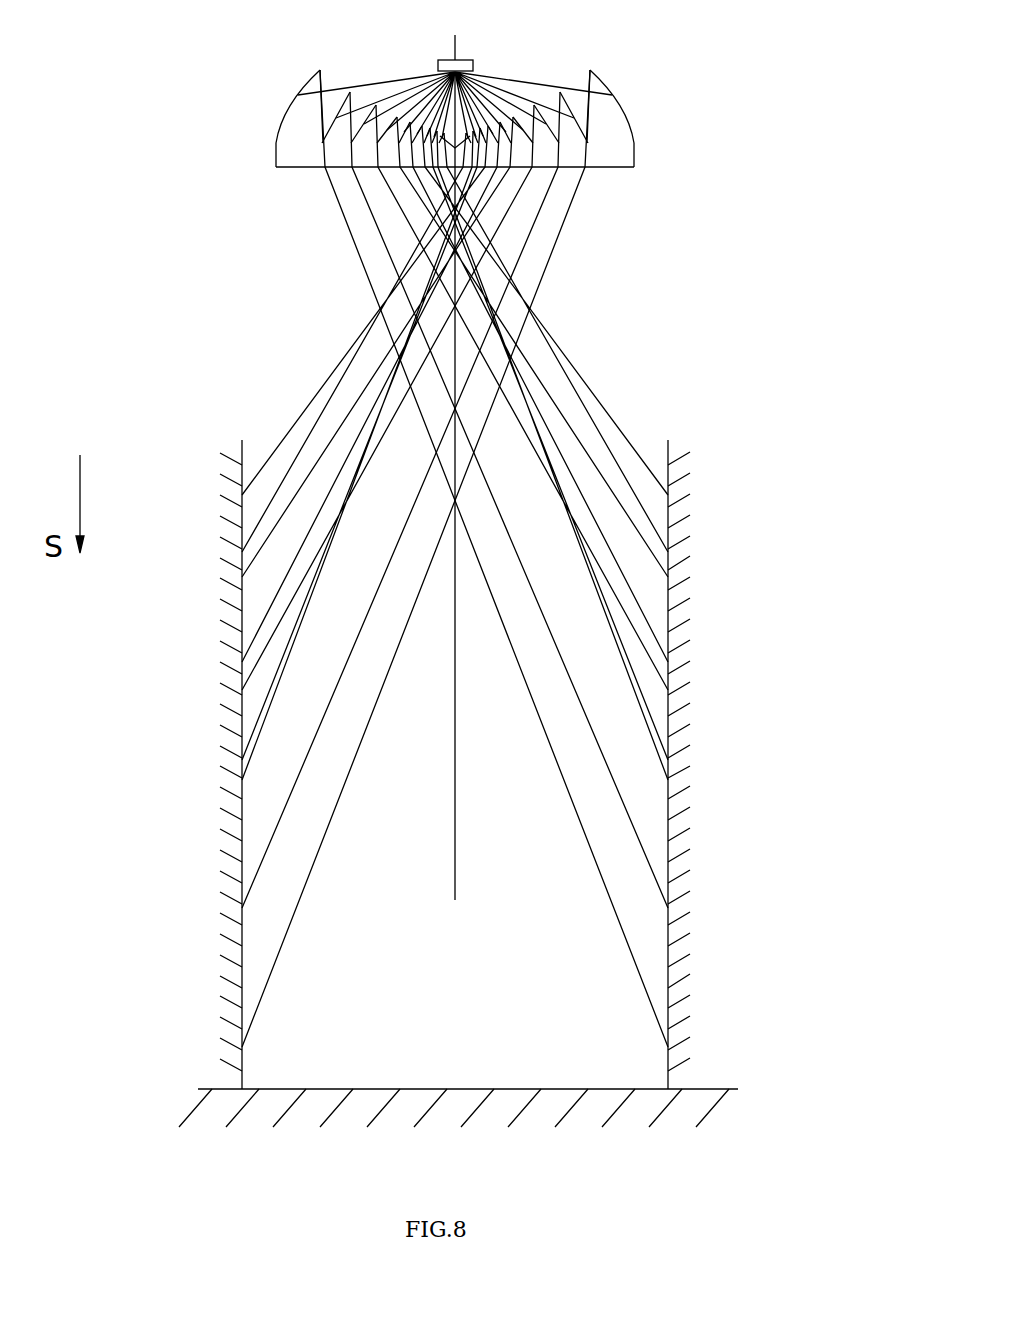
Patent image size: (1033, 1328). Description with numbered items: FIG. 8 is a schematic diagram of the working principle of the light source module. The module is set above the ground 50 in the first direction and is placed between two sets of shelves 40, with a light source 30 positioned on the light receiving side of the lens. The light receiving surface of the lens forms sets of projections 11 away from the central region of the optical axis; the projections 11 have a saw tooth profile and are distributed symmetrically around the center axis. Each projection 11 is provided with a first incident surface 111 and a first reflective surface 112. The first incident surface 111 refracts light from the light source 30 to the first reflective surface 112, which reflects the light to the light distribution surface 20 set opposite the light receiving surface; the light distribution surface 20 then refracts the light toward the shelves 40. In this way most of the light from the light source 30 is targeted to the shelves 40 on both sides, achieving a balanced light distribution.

The projections 11 is at (302, 118).
The first incident surface 111 is at (322, 82).
The first reflective surface 112 is at (617, 110).
The light distribution surface 20 is at (478, 132).
The light source 30 is at (473, 65).
The shelves 40 is at (242, 717).
The ground 50 is at (725, 1089).